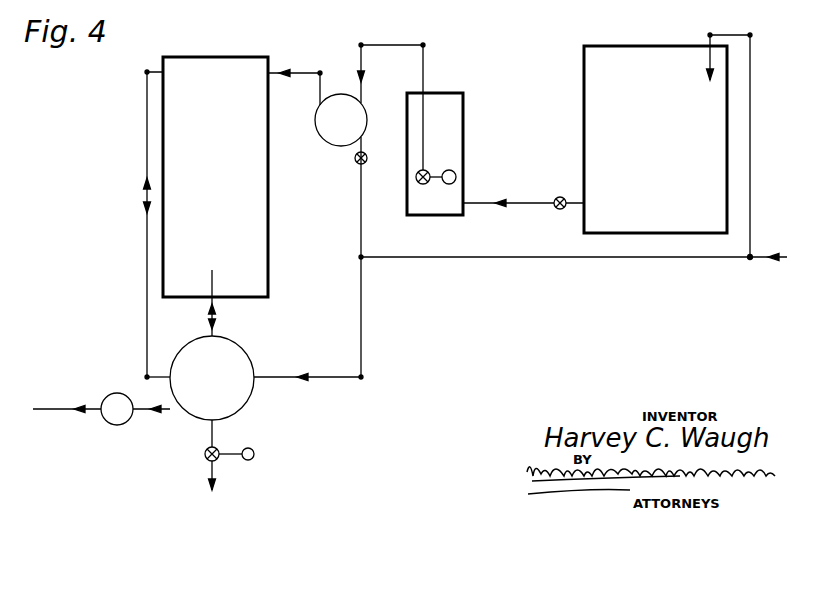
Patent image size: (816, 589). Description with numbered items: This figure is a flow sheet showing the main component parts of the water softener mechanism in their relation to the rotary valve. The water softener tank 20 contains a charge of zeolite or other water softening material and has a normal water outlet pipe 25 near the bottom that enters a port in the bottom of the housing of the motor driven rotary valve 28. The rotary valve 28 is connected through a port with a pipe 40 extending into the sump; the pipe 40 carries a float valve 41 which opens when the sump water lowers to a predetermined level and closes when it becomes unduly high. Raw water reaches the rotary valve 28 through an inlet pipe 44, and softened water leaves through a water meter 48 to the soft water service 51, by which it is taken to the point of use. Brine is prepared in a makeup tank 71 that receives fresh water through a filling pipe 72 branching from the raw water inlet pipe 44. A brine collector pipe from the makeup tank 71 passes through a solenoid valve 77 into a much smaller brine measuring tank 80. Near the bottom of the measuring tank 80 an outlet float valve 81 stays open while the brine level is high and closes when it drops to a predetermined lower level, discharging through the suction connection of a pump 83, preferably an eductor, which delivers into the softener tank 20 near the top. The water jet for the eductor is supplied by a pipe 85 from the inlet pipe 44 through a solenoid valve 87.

The water softener tank 20 is at (226, 155).
The normal water outlet pipe 25 is at (214, 291).
The motor driven rotary valve 28 is at (212, 378).
The pipe 40 is at (214, 433).
The float valve 41 is at (250, 461).
The inlet pipe 44 is at (673, 258).
The water meter 48 is at (117, 425).
The soft water service 51 is at (61, 408).
The makeup tank 71 is at (584, 67).
The filling pipe 72 is at (750, 117).
The solenoid valve 77 is at (563, 196).
The brine measuring tank 80 is at (463, 110).
The outlet float valve 81 is at (426, 171).
The pump 83 is at (327, 137).
The pipe 85 is at (361, 208).
The solenoid valve 87 is at (367, 154).